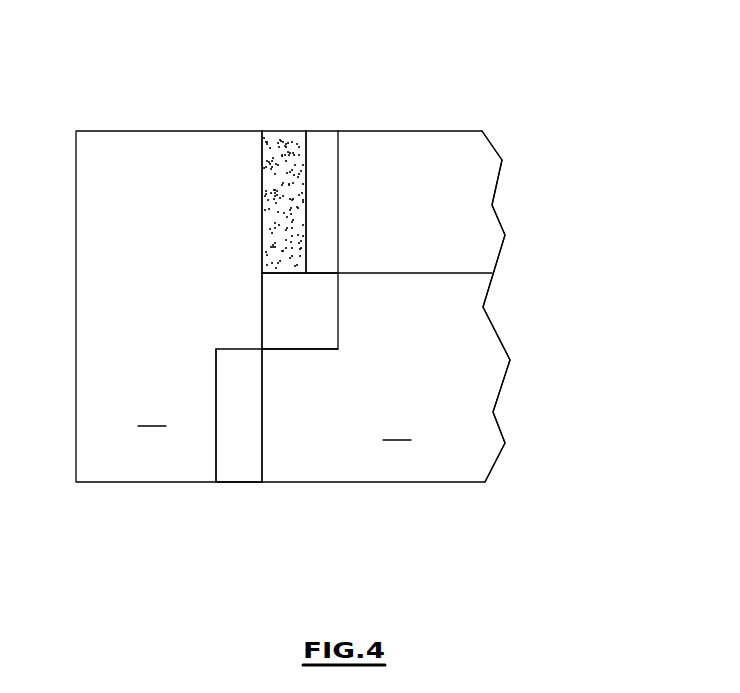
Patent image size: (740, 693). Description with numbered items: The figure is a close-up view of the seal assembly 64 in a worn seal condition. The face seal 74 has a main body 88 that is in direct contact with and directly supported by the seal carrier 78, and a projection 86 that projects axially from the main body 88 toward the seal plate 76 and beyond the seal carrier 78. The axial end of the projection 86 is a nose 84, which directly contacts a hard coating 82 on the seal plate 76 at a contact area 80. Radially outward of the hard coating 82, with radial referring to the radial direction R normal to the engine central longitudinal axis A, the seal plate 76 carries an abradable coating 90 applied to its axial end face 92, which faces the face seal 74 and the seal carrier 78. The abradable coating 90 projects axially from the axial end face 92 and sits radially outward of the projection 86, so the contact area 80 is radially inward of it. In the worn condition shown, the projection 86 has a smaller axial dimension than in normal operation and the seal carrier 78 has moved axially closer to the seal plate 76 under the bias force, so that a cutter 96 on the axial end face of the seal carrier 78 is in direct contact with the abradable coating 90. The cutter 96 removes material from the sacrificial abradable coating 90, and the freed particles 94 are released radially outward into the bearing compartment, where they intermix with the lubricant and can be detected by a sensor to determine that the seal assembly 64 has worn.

The seal assembly 64 is at (181, 127).
The face seal 74 is at (397, 427).
The seal plate 76 is at (152, 413).
The seal carrier 78 is at (474, 175).
The contact area 80 is at (263, 448).
The hard coating 82 is at (232, 468).
The nose 84 is at (262, 461).
The projection 86 is at (288, 358).
The main body 88 is at (486, 345).
The abradable coating 90 is at (272, 158).
The axial end face 92 is at (270, 208).
The freed particles 94 is at (268, 118).
The cutter 96 is at (323, 140).
The radial direction R is at (587, 385).
The engine central longitudinal axis A is at (48, 571).